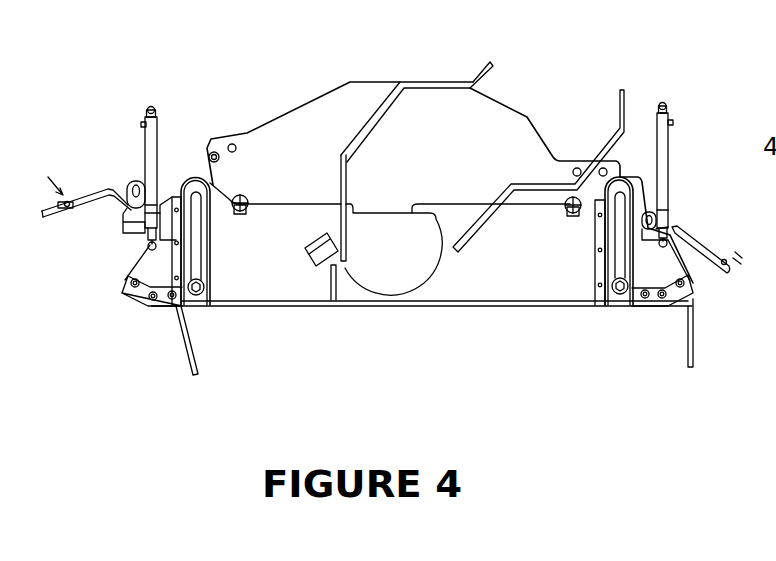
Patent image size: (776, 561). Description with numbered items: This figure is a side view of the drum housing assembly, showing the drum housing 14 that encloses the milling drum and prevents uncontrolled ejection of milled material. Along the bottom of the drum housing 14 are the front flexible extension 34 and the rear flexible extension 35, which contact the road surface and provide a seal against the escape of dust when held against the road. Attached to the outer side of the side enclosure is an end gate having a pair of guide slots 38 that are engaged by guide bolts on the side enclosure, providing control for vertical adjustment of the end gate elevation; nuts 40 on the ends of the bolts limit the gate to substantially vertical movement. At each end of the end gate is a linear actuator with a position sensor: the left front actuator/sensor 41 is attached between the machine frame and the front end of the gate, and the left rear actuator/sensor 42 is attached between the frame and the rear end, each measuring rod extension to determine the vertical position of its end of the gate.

The drum housing 14 is at (395, 74).
The left front actuator/sensor 41 is at (170, 143).
The left rear actuator/sensor 42 is at (682, 172).
The guide slots 38 is at (212, 243).
The nuts 40 is at (216, 290).
The front flexible extension 34 is at (205, 346).
The rear flexible extension 35 is at (708, 338).